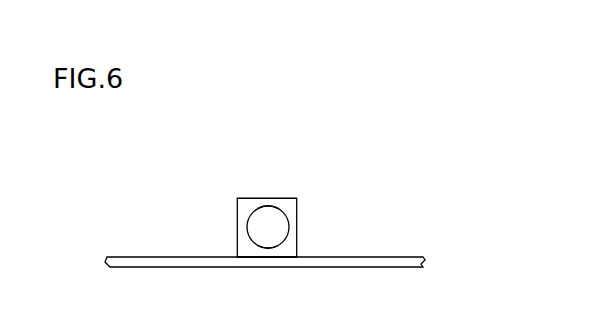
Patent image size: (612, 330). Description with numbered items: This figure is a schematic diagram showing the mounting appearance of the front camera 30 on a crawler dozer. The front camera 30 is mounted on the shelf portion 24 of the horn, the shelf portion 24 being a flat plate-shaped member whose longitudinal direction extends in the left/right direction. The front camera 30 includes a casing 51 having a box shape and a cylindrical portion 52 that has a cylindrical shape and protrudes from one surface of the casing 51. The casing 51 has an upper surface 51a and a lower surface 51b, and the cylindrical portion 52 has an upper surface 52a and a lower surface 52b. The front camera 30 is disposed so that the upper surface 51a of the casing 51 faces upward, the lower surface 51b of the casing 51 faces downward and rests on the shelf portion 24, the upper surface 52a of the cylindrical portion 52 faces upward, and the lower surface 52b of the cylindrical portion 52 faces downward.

The front camera 30 is at (318, 180).
The shelf portion 24 is at (380, 263).
The casing 51 is at (243, 207).
The cylindrical portion 52 is at (248, 226).
The upper surface 51a is at (249, 198).
The lower surface 51b is at (282, 258).
The upper surface 52a is at (267, 207).
The lower surface 52b is at (267, 248).